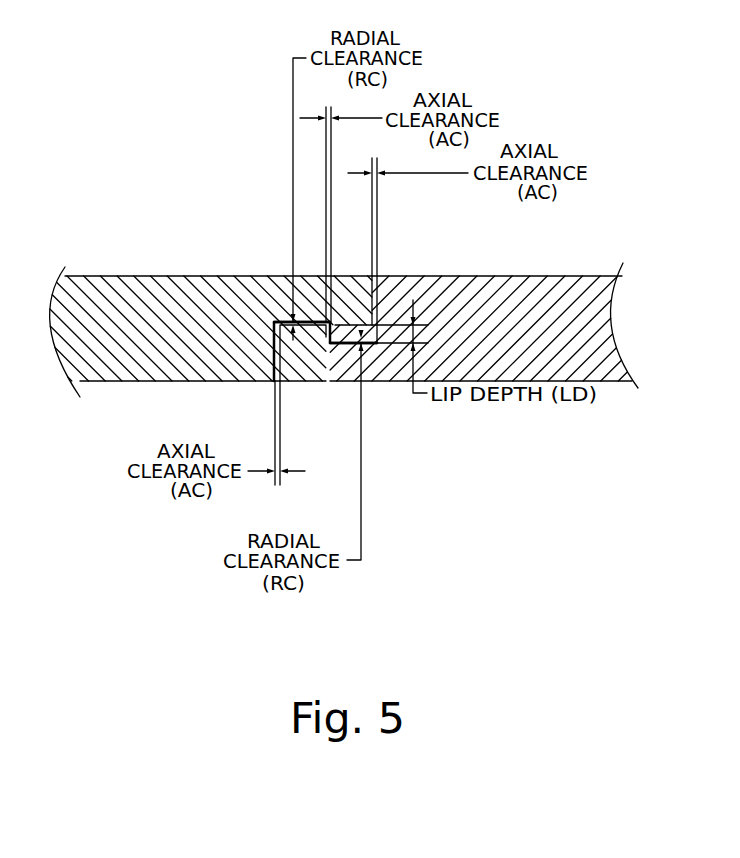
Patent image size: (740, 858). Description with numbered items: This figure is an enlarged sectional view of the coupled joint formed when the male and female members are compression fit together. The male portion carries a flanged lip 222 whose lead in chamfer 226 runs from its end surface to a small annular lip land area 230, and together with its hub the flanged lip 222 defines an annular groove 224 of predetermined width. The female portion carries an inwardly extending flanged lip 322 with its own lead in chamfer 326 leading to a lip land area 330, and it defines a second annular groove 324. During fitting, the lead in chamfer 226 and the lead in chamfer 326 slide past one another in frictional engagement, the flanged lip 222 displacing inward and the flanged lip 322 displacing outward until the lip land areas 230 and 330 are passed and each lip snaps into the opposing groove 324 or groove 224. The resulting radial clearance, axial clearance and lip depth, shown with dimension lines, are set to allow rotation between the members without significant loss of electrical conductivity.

The flanged lip 222 is at (317, 345).
The groove 224 is at (363, 332).
The lead in chamfer 226 is at (286, 330).
The lip land area 230 is at (319, 352).
The flanged lip 322 is at (257, 237).
The second annular groove 324 is at (288, 327).
The lead in chamfer 326 is at (279, 382).
The lip land area 330 is at (337, 335).